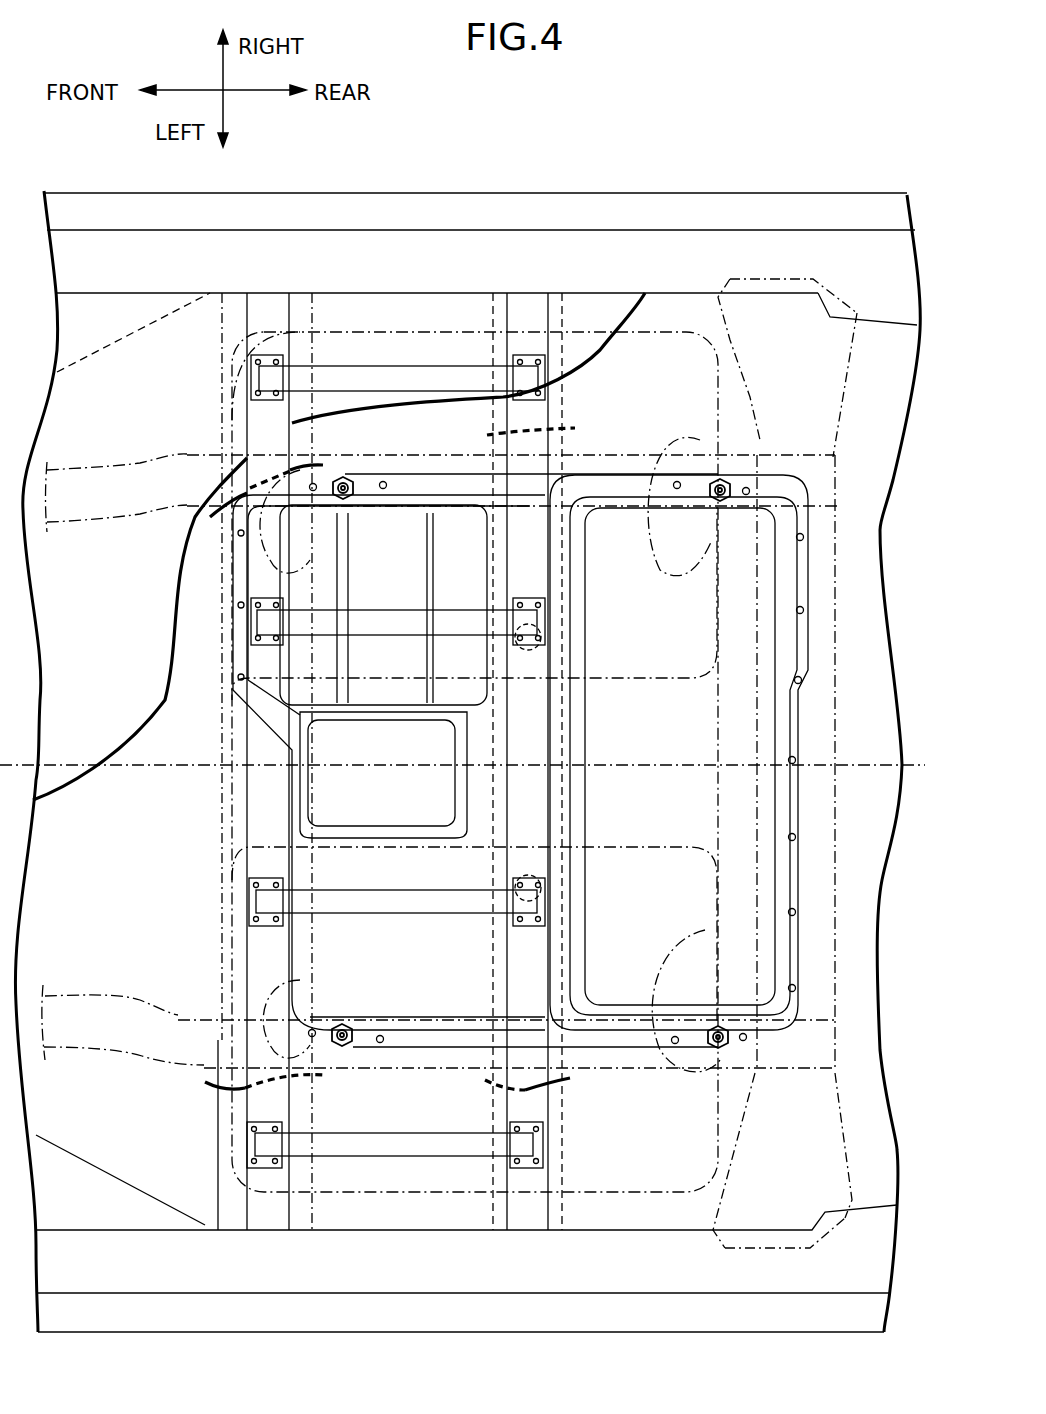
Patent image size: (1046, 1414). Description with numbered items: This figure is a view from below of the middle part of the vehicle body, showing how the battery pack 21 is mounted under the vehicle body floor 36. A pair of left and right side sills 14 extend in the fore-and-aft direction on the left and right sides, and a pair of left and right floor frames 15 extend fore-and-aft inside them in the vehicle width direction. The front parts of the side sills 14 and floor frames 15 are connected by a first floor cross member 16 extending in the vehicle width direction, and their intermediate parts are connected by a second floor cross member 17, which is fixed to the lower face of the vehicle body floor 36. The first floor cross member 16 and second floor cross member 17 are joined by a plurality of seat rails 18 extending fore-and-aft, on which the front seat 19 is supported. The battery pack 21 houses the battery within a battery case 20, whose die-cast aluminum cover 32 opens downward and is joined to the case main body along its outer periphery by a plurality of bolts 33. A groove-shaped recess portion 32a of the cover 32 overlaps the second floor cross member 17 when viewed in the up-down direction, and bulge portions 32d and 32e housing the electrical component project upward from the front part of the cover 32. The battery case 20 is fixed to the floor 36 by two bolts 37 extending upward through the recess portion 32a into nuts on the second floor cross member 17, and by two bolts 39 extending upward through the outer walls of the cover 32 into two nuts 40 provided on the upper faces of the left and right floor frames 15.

The side sill 14 is at (558, 245).
The floor frame 15 is at (187, 455).
The first floor cross member 16 is at (218, 848).
The second floor cross member 17 is at (563, 800).
The seat rail 18 is at (440, 380).
The front seat 19 is at (385, 325).
The battery case 20 is at (598, 1055).
The battery pack 21 is at (620, 420).
The cover 32 is at (748, 745).
The recess portion 32a is at (538, 745).
The bulge portion 32d is at (412, 535).
The bulge portion 32e is at (364, 790).
The bolt 33 is at (384, 482).
The vehicle body floor 36 is at (108, 638).
The bolt 37 is at (540, 635).
The bolt 39 is at (343, 478).
The nut 40 is at (347, 495).